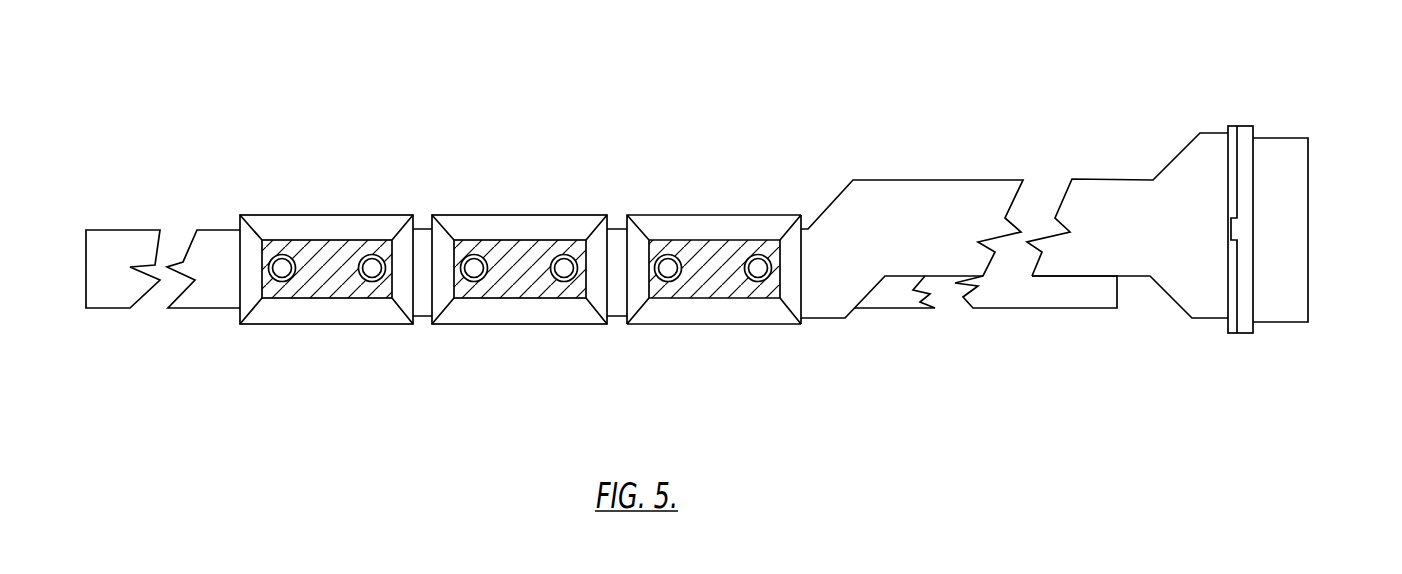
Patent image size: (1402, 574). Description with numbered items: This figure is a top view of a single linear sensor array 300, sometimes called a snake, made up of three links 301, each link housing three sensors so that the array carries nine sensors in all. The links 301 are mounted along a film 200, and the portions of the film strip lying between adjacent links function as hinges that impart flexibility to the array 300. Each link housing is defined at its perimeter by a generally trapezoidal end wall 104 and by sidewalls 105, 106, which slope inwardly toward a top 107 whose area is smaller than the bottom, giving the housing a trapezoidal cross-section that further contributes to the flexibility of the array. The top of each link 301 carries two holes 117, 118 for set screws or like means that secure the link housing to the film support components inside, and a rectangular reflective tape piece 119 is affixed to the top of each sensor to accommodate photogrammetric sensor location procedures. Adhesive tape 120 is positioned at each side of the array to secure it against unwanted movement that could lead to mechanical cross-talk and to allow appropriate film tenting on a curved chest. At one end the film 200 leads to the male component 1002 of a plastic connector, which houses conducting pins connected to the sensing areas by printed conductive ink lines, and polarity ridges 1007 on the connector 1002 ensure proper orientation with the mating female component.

The linear array 300 is at (793, 93).
The link 301 is at (523, 215).
The hole 117 is at (283, 256).
The hole 118 is at (374, 256).
The reflective tape piece 119 is at (330, 283).
The sidewall 106 is at (732, 230).
The sidewall 105 is at (718, 312).
The top 107 is at (760, 298).
The end wall 104 is at (792, 258).
The film 200 is at (203, 310).
The adhesive tape 120 is at (1007, 308).
The male component of connector 1002 is at (1308, 208).
The polarity ridges 1007 is at (1230, 333).